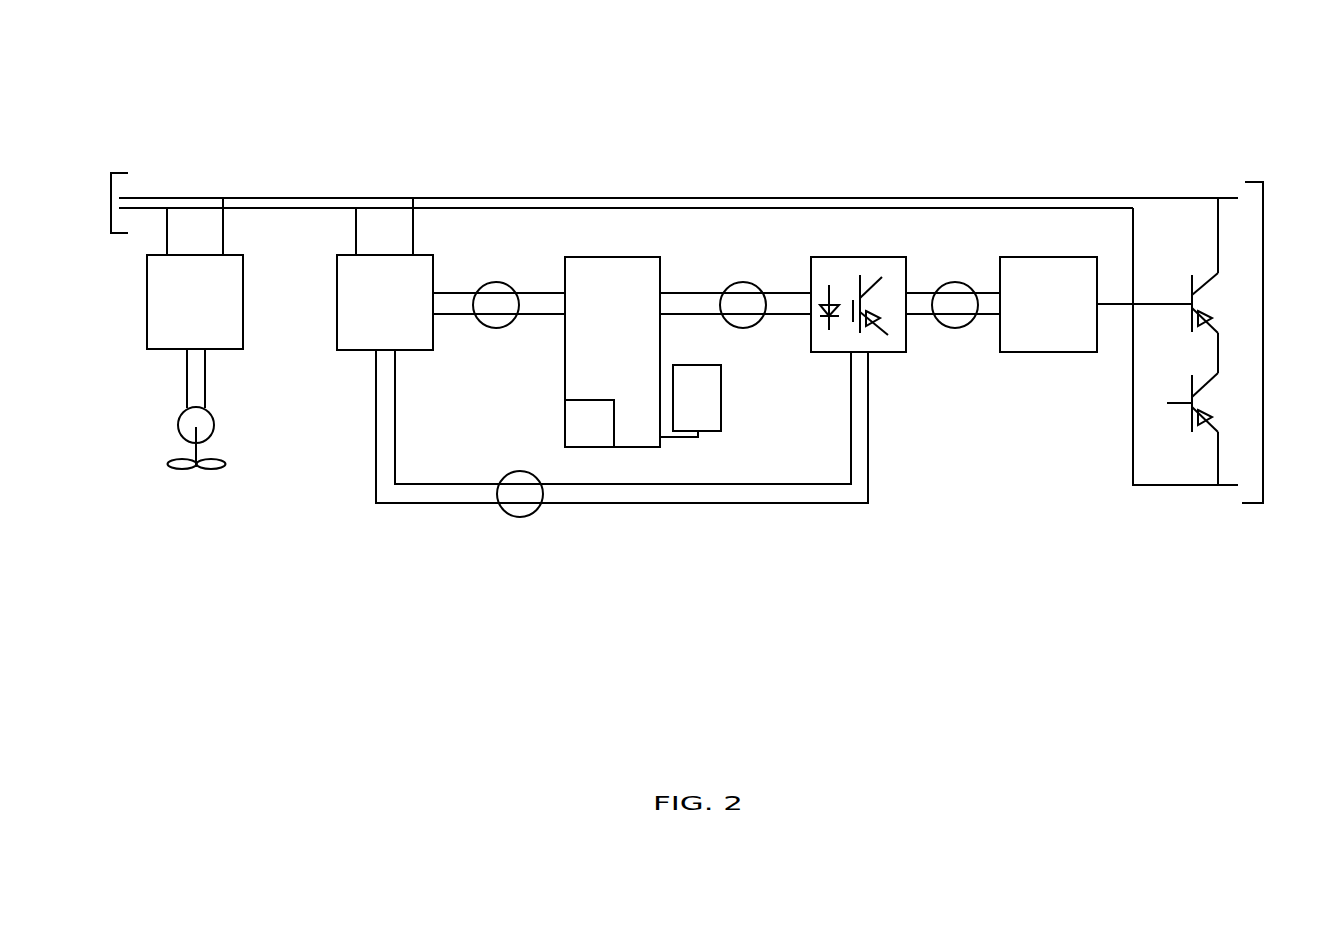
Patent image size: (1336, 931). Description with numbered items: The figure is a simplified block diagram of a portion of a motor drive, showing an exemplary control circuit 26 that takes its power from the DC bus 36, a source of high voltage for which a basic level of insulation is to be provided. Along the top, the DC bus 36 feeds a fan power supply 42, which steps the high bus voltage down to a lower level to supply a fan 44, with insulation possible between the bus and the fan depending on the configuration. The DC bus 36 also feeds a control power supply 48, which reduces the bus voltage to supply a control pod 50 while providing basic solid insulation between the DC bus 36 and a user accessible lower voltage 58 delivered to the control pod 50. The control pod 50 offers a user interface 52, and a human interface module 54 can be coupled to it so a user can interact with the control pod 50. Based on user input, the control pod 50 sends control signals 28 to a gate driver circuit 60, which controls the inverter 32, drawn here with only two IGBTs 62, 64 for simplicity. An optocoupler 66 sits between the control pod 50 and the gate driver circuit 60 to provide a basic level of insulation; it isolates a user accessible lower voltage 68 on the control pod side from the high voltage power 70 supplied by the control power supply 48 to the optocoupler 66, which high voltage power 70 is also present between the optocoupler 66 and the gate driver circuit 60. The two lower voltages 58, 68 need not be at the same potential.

The control circuit 26 is at (542, 136).
The control signals 28 is at (1112, 307).
The inverter 32 is at (1262, 237).
The DC bus 36 is at (112, 197).
The fan power supply 42 is at (148, 292).
The fan 44 is at (178, 423).
The control power supply 48 is at (350, 352).
The control pod 50 is at (613, 257).
The user interface 52 is at (578, 423).
The human interface module 54 is at (708, 400).
The user accessible lower voltage 58 is at (496, 328).
The gate driver circuit 60 is at (1063, 352).
The IGBT 62 is at (1208, 285).
The IGBT 64 is at (1213, 430).
The optocoupler 66 is at (896, 352).
The user accessible lower voltage 68 is at (743, 282).
The high voltage power 70 is at (955, 282).